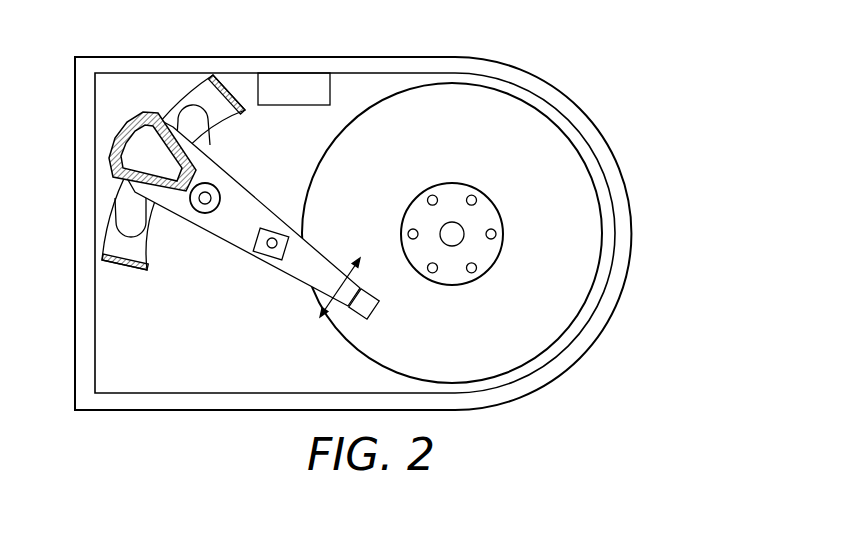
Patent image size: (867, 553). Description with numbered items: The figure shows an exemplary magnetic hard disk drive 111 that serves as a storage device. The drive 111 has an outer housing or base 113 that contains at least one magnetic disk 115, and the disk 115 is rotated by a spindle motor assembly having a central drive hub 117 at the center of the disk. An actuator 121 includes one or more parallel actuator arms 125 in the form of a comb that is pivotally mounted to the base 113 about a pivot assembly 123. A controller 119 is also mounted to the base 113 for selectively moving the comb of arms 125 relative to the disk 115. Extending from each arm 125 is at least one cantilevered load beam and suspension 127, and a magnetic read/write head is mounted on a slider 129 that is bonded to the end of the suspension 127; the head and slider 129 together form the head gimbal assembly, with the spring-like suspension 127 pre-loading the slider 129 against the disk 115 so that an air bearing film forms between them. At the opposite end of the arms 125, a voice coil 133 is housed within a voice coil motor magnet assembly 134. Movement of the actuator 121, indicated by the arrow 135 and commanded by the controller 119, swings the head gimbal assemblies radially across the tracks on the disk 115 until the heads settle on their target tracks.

The magnetic hard disk drive 111 is at (376, 206).
The outer housing or base 113 is at (352, 57).
The magnetic disk 115 is at (562, 167).
The central drive hub 117 is at (450, 183).
The controller 119 is at (283, 79).
The actuator 121 is at (265, 214).
The pivot assembly 123 is at (217, 181).
The actuator arm 125 is at (242, 198).
The cantilevered load beam and suspension 127 is at (312, 262).
The slider 129 is at (373, 308).
The voice coil 133 is at (125, 128).
The voice coil motor magnet assembly 134 is at (222, 113).
The arrow 135 is at (318, 297).